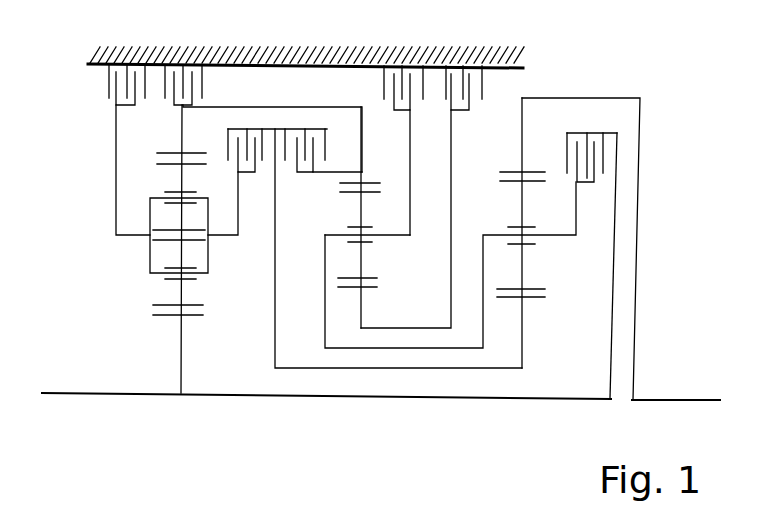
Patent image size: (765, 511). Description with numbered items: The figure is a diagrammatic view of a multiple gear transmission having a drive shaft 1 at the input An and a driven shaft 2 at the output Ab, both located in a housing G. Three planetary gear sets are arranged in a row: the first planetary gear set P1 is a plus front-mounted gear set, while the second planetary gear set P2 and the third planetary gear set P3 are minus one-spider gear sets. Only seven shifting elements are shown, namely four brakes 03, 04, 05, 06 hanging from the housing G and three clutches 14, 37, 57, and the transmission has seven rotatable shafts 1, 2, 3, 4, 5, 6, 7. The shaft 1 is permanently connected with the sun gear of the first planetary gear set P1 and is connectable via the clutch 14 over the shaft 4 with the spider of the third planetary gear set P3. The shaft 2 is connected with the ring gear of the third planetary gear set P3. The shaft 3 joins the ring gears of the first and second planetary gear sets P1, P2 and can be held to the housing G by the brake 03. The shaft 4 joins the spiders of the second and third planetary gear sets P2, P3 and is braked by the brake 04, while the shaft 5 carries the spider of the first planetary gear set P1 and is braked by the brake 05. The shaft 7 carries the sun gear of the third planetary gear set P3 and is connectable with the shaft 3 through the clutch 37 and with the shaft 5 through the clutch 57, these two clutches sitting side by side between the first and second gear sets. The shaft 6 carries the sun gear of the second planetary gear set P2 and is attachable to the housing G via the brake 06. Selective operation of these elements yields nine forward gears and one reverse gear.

The housing G is at (318, 49).
The brake 05 is at (128, 125).
The brake 03 is at (263, 93).
The brake 04 is at (403, 127).
The brake 06 is at (422, 173).
The clutch 57 is at (262, 180).
The clutch 37 is at (398, 247).
The clutch 14 is at (471, 252).
The drive shaft 1 is at (178, 249).
The driven shaft 2 is at (522, 166).
The shaft 3 is at (269, 217).
The shaft 4 is at (439, 228).
The shaft 5 is at (167, 235).
The shaft 6 is at (357, 294).
The shaft 7 is at (521, 306).
The first planetary gear set P1 is at (216, 217).
The second planetary gear set P2 is at (420, 245).
The third planetary gear set P3 is at (568, 249).
The input An is at (326, 377).
The output Ab is at (676, 378).